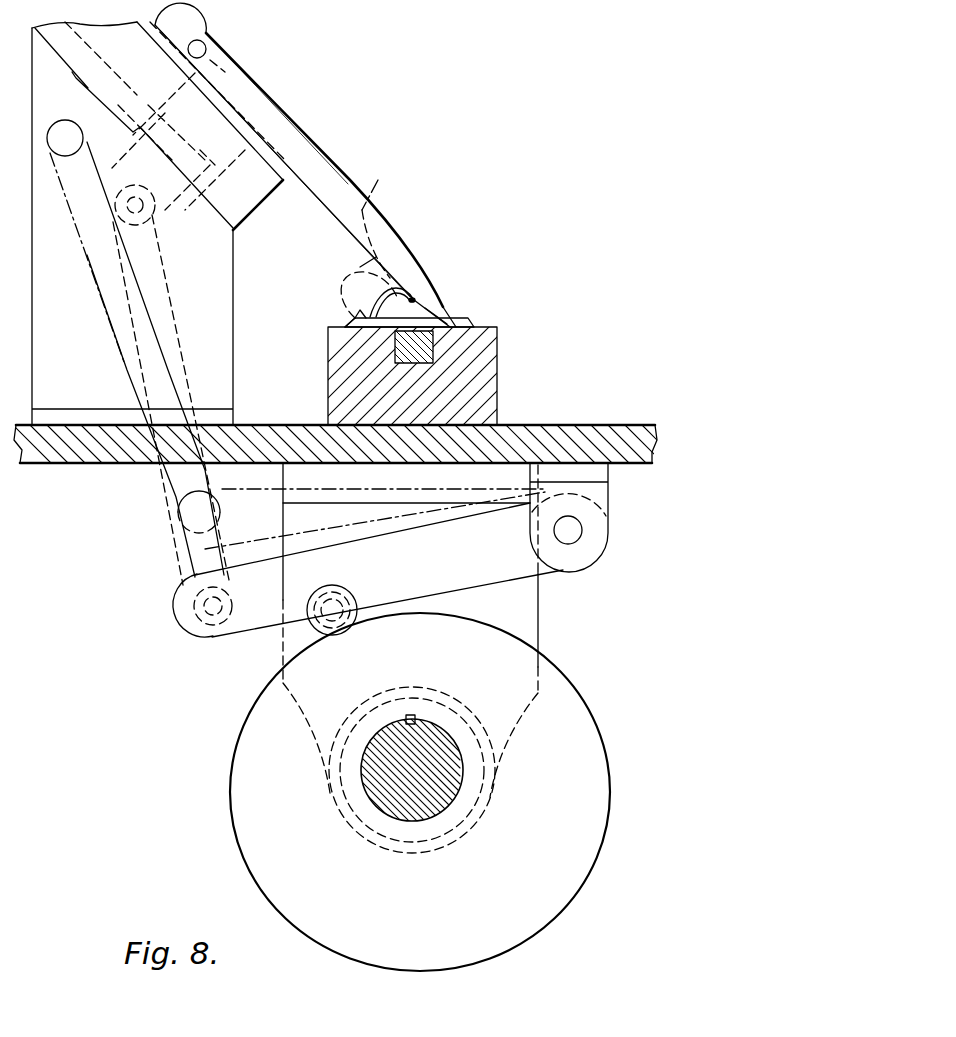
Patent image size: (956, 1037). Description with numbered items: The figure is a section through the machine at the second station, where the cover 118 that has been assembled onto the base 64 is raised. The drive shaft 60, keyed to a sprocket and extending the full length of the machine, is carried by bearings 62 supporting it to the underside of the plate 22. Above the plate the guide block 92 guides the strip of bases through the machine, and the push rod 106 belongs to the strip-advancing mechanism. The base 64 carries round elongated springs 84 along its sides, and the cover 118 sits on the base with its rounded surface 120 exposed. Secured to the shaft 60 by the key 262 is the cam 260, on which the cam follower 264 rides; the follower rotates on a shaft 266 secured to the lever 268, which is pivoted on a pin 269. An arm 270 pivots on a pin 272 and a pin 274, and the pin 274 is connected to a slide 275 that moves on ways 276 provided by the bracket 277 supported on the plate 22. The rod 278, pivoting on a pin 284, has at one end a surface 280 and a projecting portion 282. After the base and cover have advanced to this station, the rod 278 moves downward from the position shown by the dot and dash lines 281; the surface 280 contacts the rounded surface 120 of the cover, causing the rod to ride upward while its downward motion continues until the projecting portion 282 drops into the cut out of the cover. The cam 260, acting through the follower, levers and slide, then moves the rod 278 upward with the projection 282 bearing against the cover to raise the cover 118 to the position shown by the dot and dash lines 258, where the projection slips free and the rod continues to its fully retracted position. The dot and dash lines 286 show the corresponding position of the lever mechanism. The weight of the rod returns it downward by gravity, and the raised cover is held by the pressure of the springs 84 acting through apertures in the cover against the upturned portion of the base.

The plate 22 is at (615, 425).
The drive shaft 60 is at (455, 802).
The bearings 62 is at (540, 610).
The base 64 is at (466, 320).
The round elongated springs 84 is at (348, 326).
The guide block 92 is at (498, 381).
The push rod 106 is at (434, 347).
The cover 118 is at (356, 319).
The rounded surface 120 is at (397, 258).
The dot and dash lines 258 is at (345, 288).
The cam 260 is at (580, 702).
The key 262 is at (416, 716).
The cam follower 264 is at (320, 631).
The shaft 266 is at (314, 606).
The lever 268 is at (213, 640).
The pin 269 is at (583, 531).
The arm 270 is at (183, 564).
The pin 272 is at (193, 615).
The pin 274 is at (152, 222).
The slide 275 is at (257, 197).
The ways 276 is at (200, 155).
The bracket 277 is at (233, 276).
The rod 278 is at (381, 213).
The surface 280 is at (436, 309).
The dot and dash lines 281 is at (365, 205).
The projecting portion 282 is at (413, 296).
The pin 284 is at (206, 49).
The dot and dash lines 286 is at (93, 272).